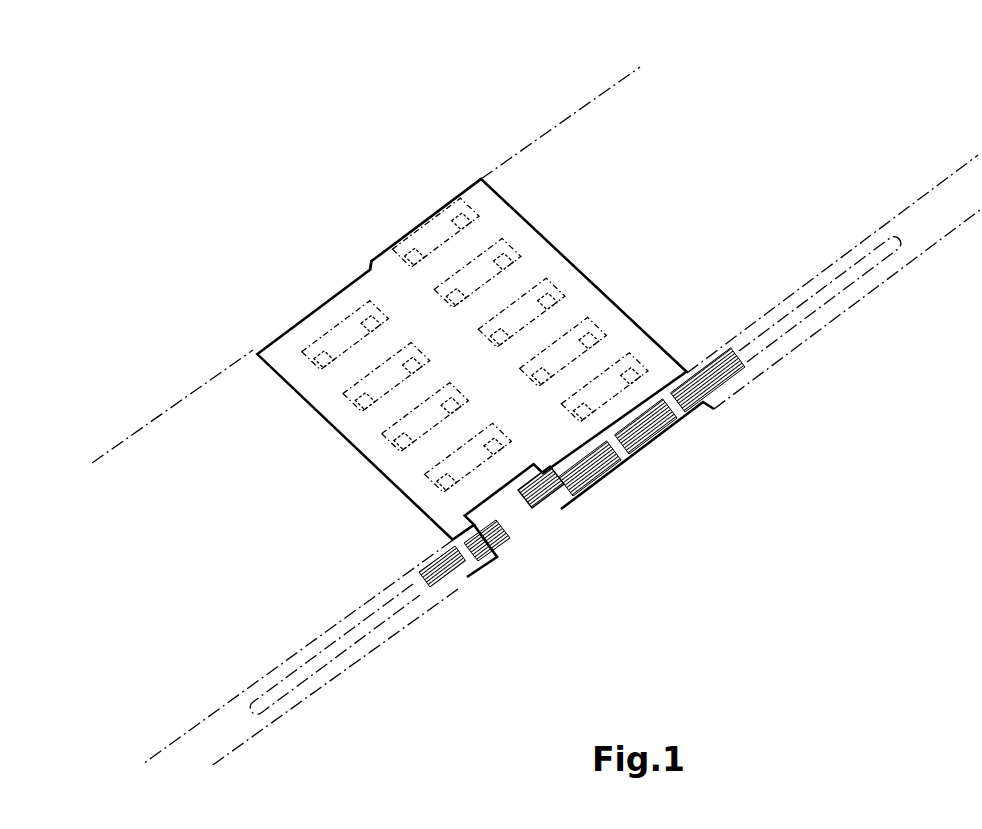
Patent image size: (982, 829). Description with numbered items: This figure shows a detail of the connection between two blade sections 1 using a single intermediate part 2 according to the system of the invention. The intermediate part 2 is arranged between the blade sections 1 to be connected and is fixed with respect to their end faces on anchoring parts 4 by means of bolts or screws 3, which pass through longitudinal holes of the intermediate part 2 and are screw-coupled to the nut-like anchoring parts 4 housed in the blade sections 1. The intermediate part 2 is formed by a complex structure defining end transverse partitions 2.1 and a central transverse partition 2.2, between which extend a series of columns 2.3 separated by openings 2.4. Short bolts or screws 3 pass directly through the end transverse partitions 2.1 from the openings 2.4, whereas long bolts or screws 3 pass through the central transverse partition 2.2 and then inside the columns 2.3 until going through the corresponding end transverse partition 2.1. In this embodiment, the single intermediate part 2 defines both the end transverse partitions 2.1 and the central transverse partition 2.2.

The blade section 1 is at (612, 153).
The intermediate part 2 is at (345, 265).
The end transverse partition 2.1 is at (553, 267).
The central transverse partition 2.2 is at (427, 317).
The column 2.3 is at (400, 397).
The opening 2.4 is at (533, 307).
The bolt or screw 3 is at (630, 437).
The anchoring part 4 is at (805, 331).